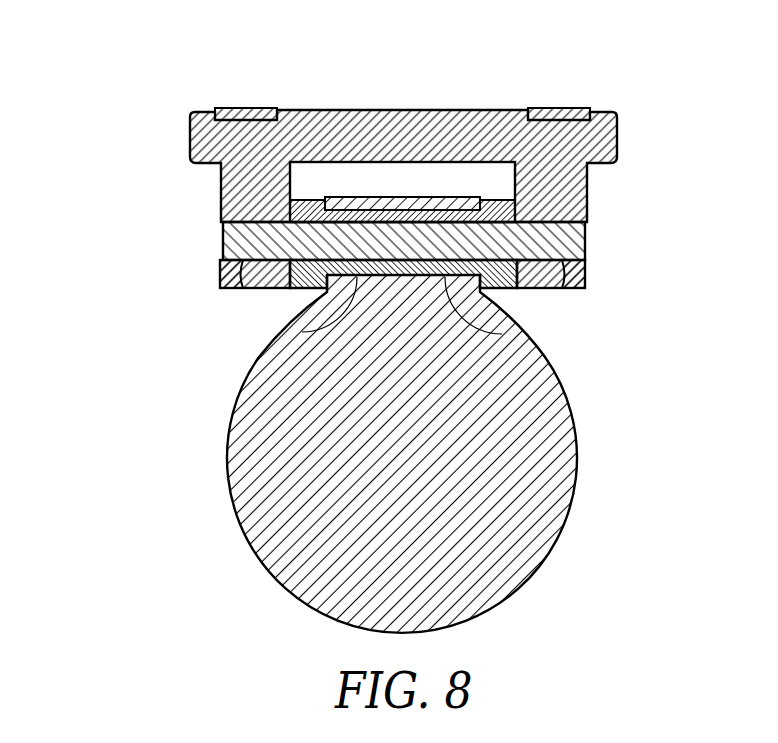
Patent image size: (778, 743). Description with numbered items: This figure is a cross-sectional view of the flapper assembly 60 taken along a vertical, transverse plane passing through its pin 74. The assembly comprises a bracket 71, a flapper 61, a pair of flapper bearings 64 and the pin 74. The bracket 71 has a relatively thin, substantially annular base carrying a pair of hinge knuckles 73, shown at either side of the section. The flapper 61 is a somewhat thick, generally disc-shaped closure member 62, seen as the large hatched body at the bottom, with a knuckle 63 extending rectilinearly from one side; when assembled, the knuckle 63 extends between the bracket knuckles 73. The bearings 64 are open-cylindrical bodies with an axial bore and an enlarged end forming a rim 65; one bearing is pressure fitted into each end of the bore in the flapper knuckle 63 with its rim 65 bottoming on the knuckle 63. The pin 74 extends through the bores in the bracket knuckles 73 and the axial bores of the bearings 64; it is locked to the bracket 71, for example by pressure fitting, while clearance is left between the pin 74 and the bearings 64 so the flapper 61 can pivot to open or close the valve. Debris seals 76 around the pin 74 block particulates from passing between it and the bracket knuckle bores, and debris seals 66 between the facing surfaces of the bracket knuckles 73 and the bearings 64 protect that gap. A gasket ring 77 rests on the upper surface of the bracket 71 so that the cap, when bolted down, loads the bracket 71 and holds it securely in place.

The flapper assembly 60 is at (112, 107).
The flapper 61 is at (577, 453).
The closure member 62 is at (553, 507).
The knuckle 63 is at (372, 208).
The flapper bearings 64 is at (292, 334).
The rim 65 is at (313, 199).
The debris seals 66 is at (290, 218).
The bracket 71 is at (615, 110).
The hinge knuckles 73 is at (222, 273).
The pin 74 is at (583, 243).
The debris seals 76 is at (228, 290).
The gasket ring 77 is at (237, 109).